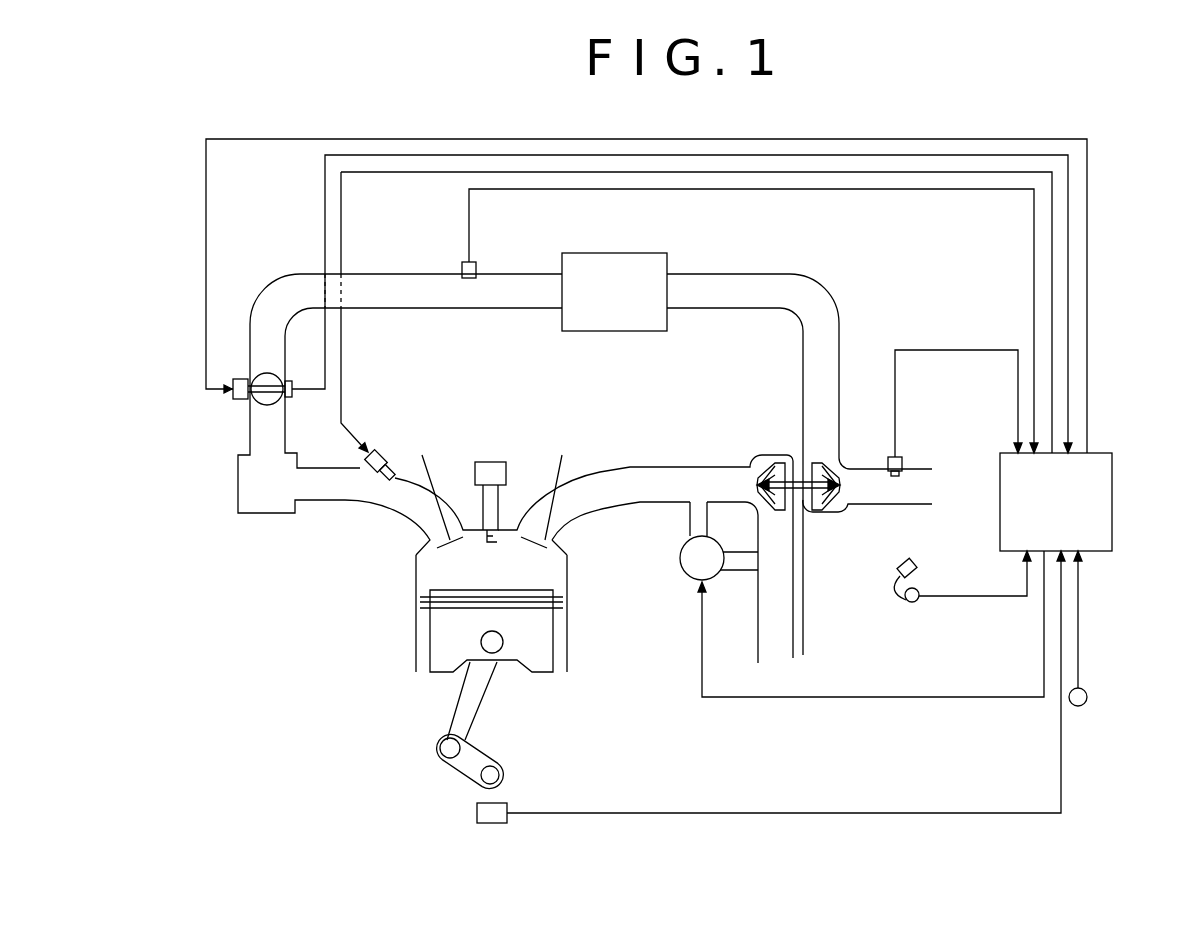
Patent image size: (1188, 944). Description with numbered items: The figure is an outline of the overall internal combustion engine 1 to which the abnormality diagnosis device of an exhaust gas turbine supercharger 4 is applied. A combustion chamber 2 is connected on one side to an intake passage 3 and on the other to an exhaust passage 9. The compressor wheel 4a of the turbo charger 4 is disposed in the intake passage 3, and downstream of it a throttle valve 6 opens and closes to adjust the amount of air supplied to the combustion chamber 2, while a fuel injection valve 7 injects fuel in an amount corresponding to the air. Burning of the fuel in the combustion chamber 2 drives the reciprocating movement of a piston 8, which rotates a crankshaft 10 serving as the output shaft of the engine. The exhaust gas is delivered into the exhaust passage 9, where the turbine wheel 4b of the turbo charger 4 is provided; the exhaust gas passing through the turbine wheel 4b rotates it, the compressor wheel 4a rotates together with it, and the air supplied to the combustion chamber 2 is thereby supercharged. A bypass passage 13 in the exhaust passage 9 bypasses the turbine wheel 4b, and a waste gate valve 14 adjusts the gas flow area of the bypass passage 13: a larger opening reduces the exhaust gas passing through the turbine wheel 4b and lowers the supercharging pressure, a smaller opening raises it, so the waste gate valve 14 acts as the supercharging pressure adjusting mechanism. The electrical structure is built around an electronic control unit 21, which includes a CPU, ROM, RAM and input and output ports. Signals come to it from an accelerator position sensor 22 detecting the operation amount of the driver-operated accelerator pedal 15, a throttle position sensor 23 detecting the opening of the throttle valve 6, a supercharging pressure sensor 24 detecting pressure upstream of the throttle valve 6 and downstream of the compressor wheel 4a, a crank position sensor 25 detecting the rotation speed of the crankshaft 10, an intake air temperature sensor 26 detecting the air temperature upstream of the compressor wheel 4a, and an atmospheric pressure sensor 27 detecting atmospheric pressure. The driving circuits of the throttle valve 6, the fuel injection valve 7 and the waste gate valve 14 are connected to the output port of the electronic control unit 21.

The internal combustion engine 1 is at (883, 270).
The combustion chamber 2 is at (416, 572).
The intake passage 3 is at (350, 500).
The exhaust gas turbine supercharger 4 is at (798, 485).
The compressor wheel 4a is at (838, 512).
The turbine wheel 4b is at (760, 470).
The throttle valve 6 is at (272, 374).
The fuel injection valve 7 is at (362, 457).
The piston 8 is at (537, 665).
The exhaust passage 9 is at (650, 500).
The crankshaft 10 is at (500, 775).
The bypass passage 13 is at (745, 572).
The waste gate valve 14 is at (680, 565).
The accelerator pedal 15 is at (918, 567).
The electronic control unit 21 is at (1000, 453).
The accelerator position sensor 22 is at (912, 603).
The throttle position sensor 23 is at (293, 398).
The supercharging pressure sensor 24 is at (476, 262).
The crank position sensor 25 is at (476, 812).
The intake air temperature sensor 26 is at (902, 458).
The atmospheric pressure sensor 27 is at (1080, 707).